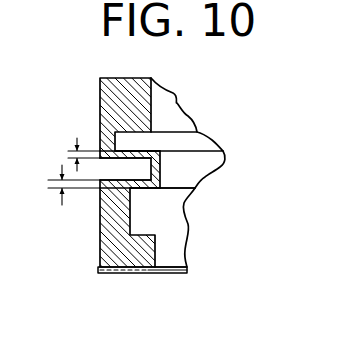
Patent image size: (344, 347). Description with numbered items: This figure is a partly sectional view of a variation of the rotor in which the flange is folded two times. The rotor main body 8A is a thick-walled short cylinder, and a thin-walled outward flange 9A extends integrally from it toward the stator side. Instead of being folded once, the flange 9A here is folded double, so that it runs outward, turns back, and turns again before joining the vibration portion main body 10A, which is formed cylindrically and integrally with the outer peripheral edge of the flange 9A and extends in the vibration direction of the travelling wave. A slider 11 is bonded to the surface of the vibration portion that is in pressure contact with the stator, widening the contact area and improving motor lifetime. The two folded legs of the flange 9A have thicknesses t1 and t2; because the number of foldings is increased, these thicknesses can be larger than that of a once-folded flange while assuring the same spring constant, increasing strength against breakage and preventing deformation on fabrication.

The rotor main body 8A is at (147, 77).
The flange 9A is at (160, 142).
The vibration portion main body 10A is at (113, 250).
The slider 11 is at (142, 271).
The thickness of flange t1 is at (69, 152).
The thickness of flange t2 is at (56, 180).